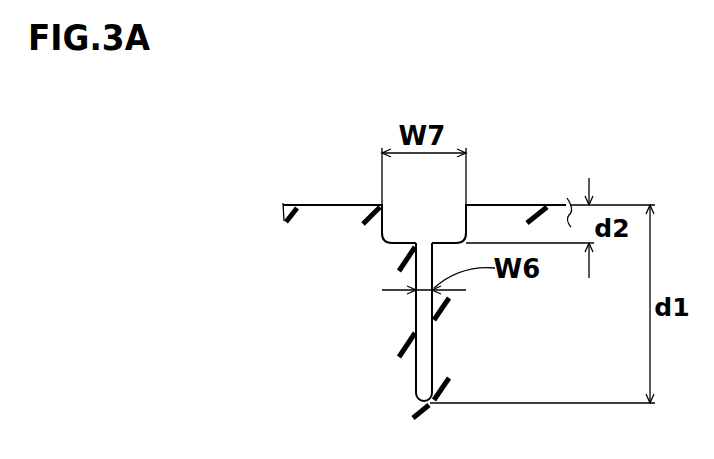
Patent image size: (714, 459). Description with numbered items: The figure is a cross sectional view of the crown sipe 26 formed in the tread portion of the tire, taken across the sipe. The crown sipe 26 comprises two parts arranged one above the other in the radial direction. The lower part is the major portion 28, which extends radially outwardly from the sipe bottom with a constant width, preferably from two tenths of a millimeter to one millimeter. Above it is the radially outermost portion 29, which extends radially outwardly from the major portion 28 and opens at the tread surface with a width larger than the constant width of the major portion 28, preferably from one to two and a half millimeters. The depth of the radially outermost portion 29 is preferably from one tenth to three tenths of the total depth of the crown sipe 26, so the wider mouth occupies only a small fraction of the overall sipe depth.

The crown sipe 26 is at (399, 308).
The radially outermost portion 29 is at (417, 221).
The major portion 28 is at (420, 308).